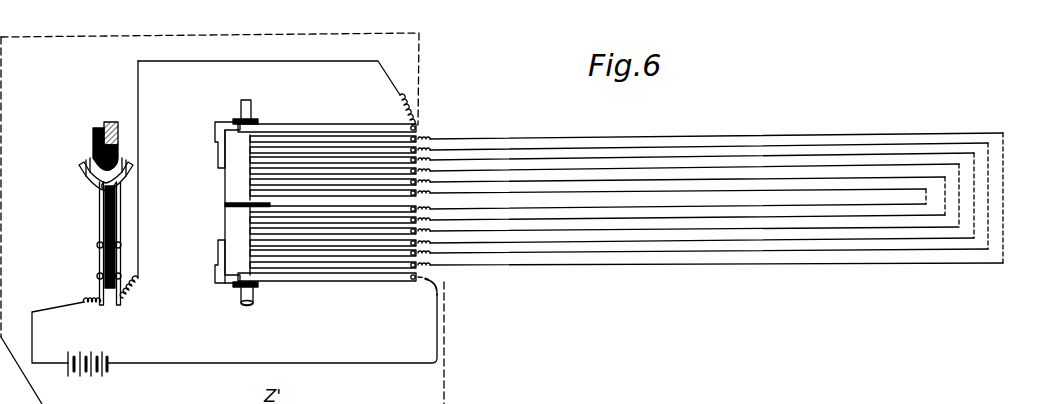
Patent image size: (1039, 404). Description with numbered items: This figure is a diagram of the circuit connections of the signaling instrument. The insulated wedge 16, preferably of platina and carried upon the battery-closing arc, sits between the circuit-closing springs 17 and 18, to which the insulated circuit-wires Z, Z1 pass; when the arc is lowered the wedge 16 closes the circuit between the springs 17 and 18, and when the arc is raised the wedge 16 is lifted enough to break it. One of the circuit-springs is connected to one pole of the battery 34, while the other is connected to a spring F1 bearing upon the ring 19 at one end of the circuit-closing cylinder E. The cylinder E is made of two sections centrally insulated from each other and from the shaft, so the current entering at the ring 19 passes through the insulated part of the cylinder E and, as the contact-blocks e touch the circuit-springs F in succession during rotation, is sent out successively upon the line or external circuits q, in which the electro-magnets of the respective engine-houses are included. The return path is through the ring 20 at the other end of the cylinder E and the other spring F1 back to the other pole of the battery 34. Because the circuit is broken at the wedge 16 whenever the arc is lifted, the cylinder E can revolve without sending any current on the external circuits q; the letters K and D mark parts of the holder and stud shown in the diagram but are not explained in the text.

The electrode holder block K is at (113, 119).
The insulated wedge 16 is at (93, 153).
The circuit-closing spring 17 is at (119, 241).
The circuit-closing spring 18 is at (99, 230).
The ring 19 is at (220, 124).
The ring 20 is at (222, 283).
The battery 34 is at (87, 377).
The circuit-wire Z is at (66, 325).
The circuit-wire Z1 is at (141, 278).
The circuit-closing cylinder E is at (247, 206).
The contact-block e is at (220, 202).
The circuit-spring F is at (340, 202).
The spring F1 is at (327, 203).
The stud D is at (255, 299).
The external circuit q is at (716, 204).